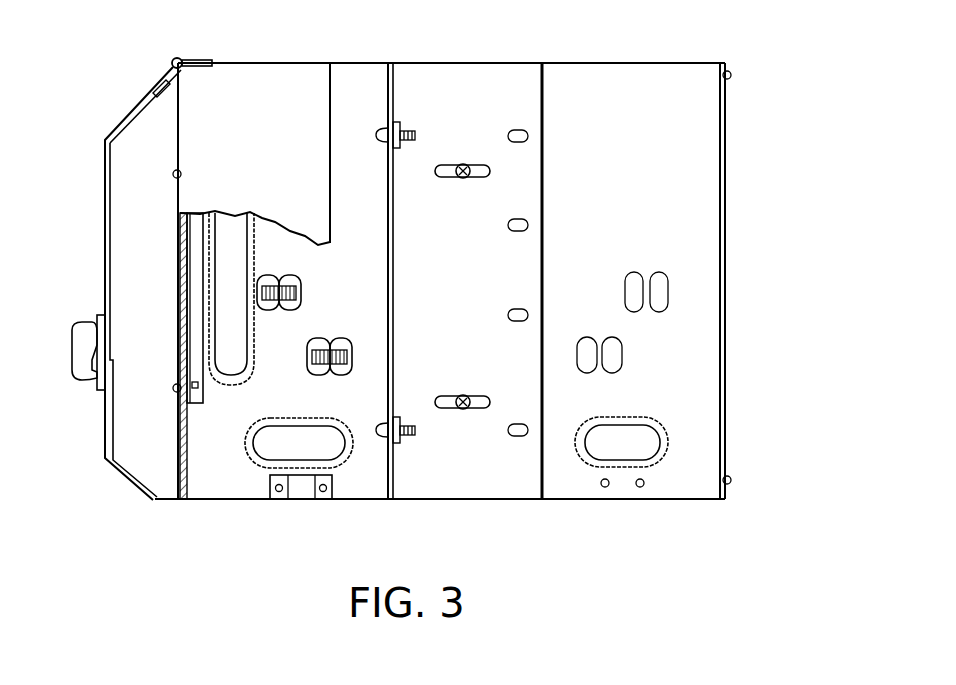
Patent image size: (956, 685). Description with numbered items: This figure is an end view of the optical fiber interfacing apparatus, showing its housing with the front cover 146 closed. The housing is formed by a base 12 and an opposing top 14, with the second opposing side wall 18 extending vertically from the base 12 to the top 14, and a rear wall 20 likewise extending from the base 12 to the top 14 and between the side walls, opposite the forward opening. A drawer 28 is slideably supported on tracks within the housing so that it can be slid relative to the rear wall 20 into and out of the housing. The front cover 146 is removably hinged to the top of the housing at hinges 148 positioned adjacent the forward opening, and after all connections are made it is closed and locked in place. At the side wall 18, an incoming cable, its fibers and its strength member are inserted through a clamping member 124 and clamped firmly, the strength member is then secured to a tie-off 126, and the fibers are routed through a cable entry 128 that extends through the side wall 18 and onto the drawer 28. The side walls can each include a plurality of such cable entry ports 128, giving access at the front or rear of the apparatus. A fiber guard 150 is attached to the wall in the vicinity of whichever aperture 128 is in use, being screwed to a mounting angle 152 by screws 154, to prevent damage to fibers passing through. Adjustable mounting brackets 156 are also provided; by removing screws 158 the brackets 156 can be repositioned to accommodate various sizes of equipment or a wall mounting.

The base 12 is at (497, 500).
The top 14 is at (516, 62).
The second opposing side wall 18 is at (626, 203).
The rear wall 20 is at (728, 295).
The drawer 28 is at (100, 447).
The clamping member 124 is at (328, 348).
The tie-off 126 is at (302, 493).
The cable entry 128 is at (338, 442).
The front cover 146 is at (105, 168).
The hinges 148 is at (197, 58).
The fiber guard 150 is at (312, 80).
The mounting angle 152 is at (200, 215).
The screws 154 is at (175, 388).
The adjustable mounting brackets 156 is at (463, 82).
The screws 158 is at (470, 178).